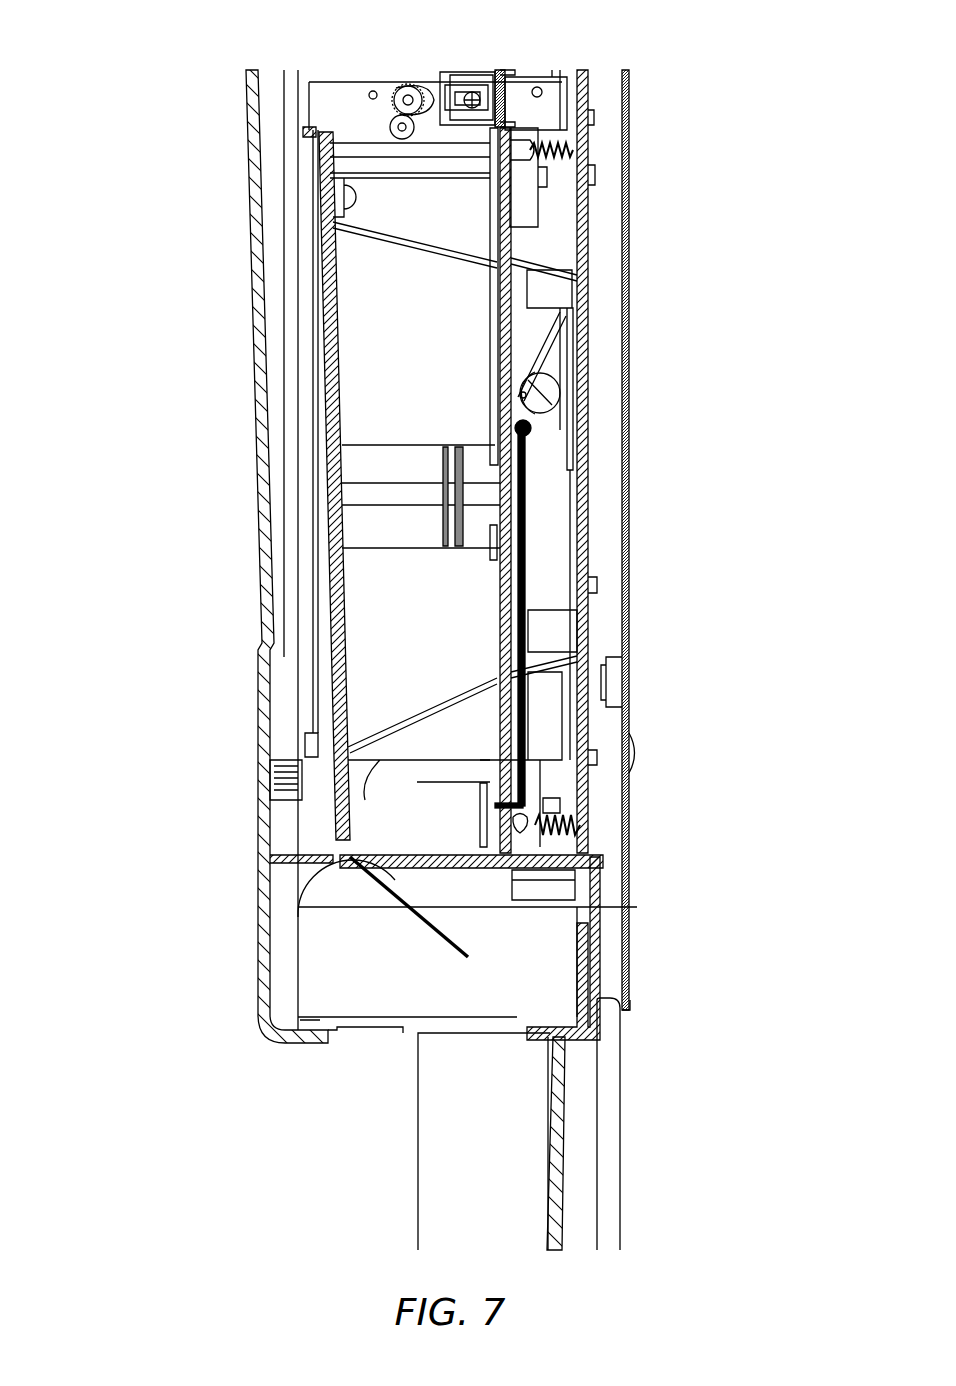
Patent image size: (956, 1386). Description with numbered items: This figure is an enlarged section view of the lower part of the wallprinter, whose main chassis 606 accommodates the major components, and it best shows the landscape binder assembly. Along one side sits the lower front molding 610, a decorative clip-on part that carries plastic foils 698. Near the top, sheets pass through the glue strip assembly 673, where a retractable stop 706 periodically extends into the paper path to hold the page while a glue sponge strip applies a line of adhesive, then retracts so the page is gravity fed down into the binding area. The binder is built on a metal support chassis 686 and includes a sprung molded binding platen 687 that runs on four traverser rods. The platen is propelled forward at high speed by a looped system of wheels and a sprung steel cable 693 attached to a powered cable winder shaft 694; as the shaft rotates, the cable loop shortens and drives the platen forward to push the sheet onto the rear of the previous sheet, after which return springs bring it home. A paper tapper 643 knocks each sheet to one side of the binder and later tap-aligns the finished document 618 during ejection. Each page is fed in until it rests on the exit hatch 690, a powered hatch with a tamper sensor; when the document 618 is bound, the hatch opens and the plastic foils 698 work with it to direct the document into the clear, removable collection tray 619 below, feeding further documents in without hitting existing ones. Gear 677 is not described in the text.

The lower front molding 610 is at (250, 278).
The gear 677 is at (412, 88).
The glue strip assembly 673 is at (480, 67).
The metal support chassis 686 is at (548, 226).
The cable winder shaft 694 is at (545, 390).
The paper tapper 643 is at (480, 497).
The main chassis 606 is at (583, 558).
The sprung molded binding platen 687 is at (518, 610).
The retractable stop 706 is at (523, 757).
The sprung steel cable 693 is at (387, 725).
The plastic foils 698 is at (298, 917).
The exit hatch 690 is at (528, 897).
The collection tray 619 is at (593, 1123).
The document 618 is at (447, 1172).